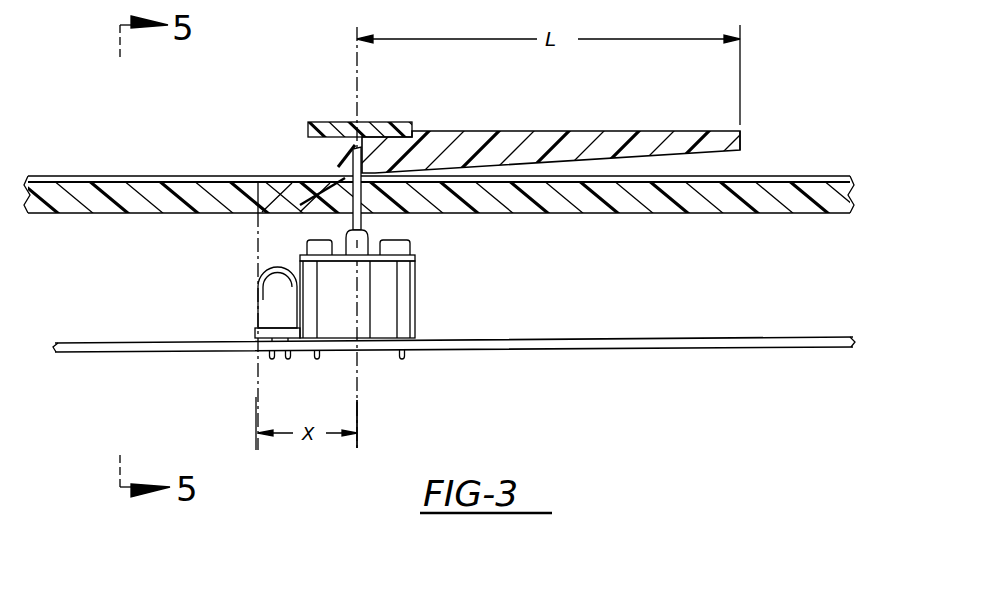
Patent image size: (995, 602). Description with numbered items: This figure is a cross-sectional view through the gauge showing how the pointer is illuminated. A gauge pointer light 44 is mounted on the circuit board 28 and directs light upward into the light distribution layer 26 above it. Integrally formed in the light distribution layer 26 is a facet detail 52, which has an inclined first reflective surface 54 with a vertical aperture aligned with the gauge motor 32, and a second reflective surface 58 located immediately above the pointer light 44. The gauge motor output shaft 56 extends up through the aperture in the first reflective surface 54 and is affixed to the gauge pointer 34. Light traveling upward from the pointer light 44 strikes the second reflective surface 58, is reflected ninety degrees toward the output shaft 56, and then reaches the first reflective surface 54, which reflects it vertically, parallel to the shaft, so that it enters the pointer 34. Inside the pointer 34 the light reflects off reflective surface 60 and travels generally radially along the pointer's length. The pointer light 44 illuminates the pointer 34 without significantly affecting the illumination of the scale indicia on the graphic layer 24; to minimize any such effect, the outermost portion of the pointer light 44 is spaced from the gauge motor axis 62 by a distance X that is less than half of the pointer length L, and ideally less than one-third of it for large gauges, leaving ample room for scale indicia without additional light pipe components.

The graphic layer 24 is at (763, 165).
The light distribution layer 26 is at (728, 216).
The circuit board 28 is at (680, 358).
The gauge motor 32 is at (416, 294).
The gauge pointer 34 is at (753, 121).
The gauge pointer light 44 is at (264, 276).
The facet detail 52 is at (276, 171).
The first reflective surface 54 is at (340, 206).
The gauge motor output shaft 56 is at (362, 222).
The second reflective surface 58 is at (276, 210).
The reflective surface 60 is at (351, 148).
The gauge motor axis 62 is at (357, 403).